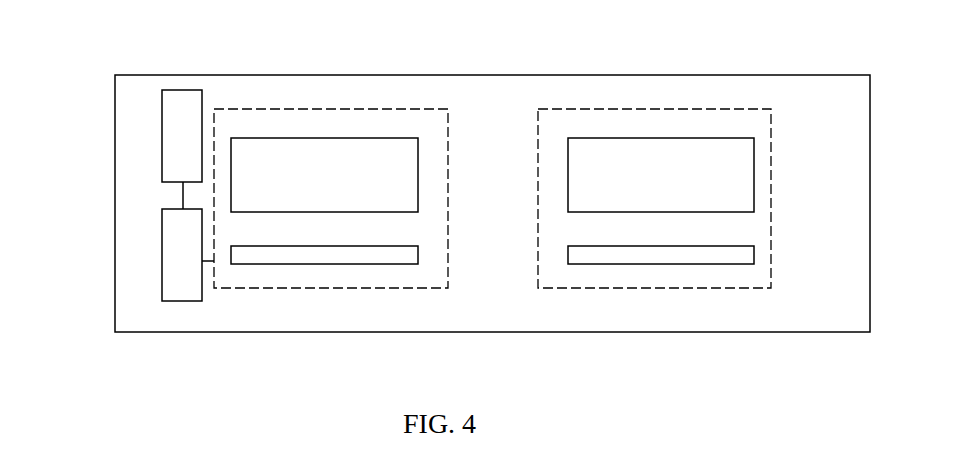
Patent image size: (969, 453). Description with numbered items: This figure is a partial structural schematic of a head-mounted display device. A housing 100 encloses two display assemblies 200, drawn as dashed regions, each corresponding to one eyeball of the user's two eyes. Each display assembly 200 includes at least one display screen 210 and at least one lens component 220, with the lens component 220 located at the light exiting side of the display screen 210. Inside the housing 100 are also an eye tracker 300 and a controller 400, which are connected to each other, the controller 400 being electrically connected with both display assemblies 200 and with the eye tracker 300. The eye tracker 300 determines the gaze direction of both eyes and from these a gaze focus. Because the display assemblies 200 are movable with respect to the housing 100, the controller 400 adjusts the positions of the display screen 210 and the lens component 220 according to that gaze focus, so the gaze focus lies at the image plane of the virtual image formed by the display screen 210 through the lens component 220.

The housing 100 is at (142, 157).
The display assembly 200 is at (298, 109).
The display screen 210 is at (603, 254).
The lens component 220 is at (737, 194).
The eye tracker 300 is at (181, 114).
The controller 400 is at (176, 265).